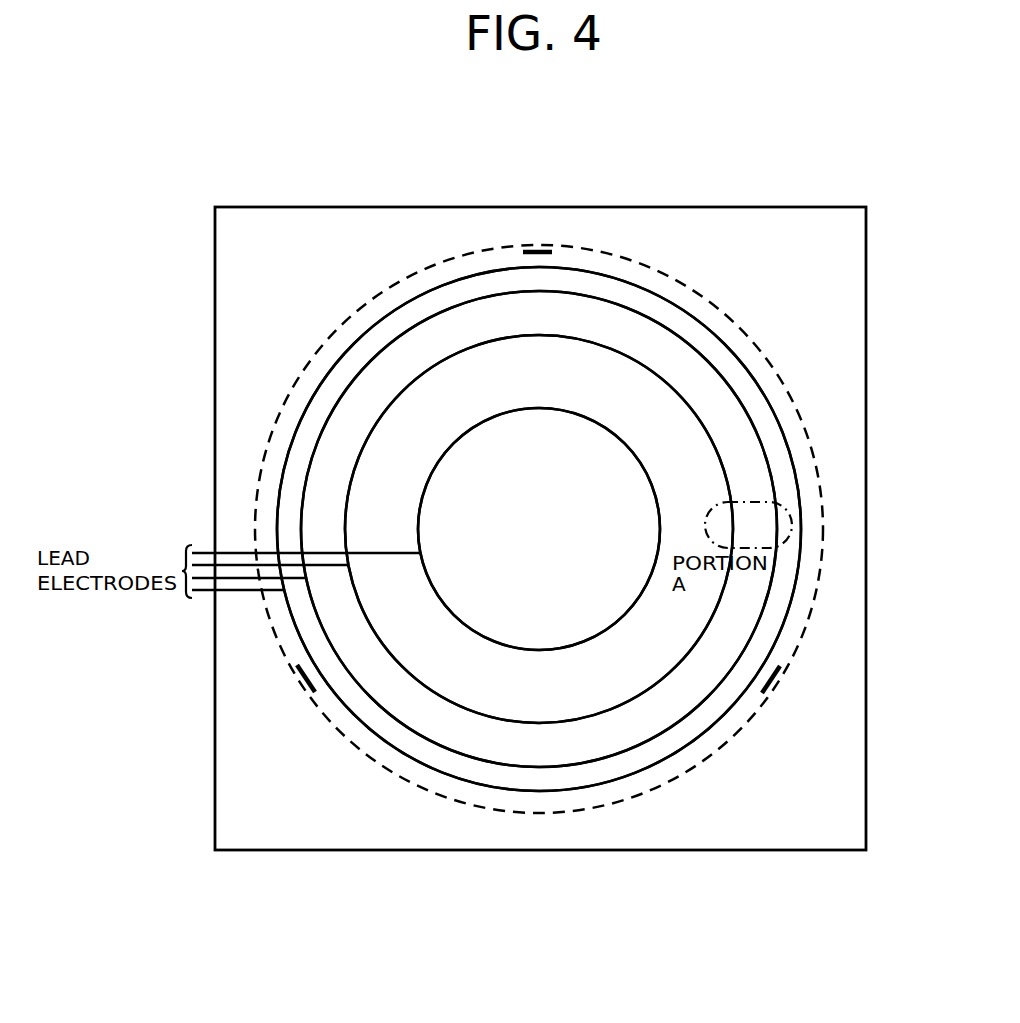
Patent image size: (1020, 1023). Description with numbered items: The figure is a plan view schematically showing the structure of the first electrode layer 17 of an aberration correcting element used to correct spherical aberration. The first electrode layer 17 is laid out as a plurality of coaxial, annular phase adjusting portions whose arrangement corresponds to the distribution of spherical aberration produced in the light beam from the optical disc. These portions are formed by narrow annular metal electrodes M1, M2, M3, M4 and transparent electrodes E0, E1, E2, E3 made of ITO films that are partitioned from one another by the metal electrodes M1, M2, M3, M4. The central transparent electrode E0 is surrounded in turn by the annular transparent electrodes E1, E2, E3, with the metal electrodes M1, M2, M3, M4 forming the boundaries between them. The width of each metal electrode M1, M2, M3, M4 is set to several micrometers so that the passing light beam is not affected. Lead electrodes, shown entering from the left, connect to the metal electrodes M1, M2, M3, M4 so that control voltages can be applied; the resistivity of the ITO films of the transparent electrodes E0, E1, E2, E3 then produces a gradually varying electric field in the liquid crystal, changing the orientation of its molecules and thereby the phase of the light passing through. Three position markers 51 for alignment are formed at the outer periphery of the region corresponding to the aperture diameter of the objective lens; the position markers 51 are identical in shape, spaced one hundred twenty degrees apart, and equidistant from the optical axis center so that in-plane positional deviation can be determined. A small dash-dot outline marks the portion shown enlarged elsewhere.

The first electrode layer 17 is at (270, 249).
The position marker 51 is at (541, 245).
The transparent electrode E0 is at (500, 569).
The transparent electrode E1 is at (458, 671).
The transparent electrode E2 is at (458, 731).
The transparent electrode E3 is at (477, 771).
The metal electrode M1 is at (640, 461).
The metal electrode M2 is at (702, 420).
The metal electrode M3 is at (728, 384).
The metal electrode M4 is at (755, 378).